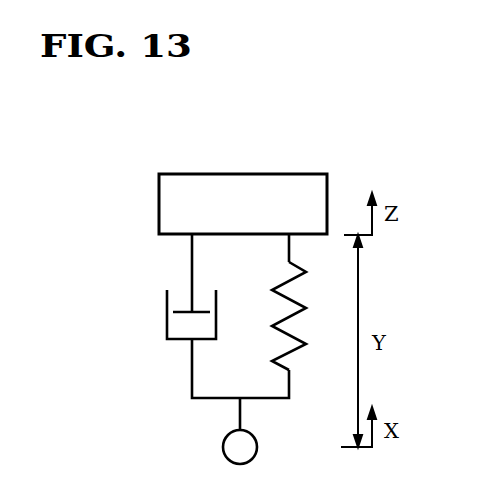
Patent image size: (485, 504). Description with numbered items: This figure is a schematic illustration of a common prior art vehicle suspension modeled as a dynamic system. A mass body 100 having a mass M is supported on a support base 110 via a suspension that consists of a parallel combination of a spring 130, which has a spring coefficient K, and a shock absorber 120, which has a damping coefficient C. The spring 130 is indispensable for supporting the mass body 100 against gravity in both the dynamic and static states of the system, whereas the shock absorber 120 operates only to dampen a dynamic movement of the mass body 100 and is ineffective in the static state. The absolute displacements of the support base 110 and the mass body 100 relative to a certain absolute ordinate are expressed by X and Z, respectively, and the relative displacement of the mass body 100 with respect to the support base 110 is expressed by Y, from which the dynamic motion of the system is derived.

The mass body 100 is at (158, 206).
The support base 110 is at (223, 447).
The shock absorber 120 is at (167, 300).
The spring 130 is at (283, 284).